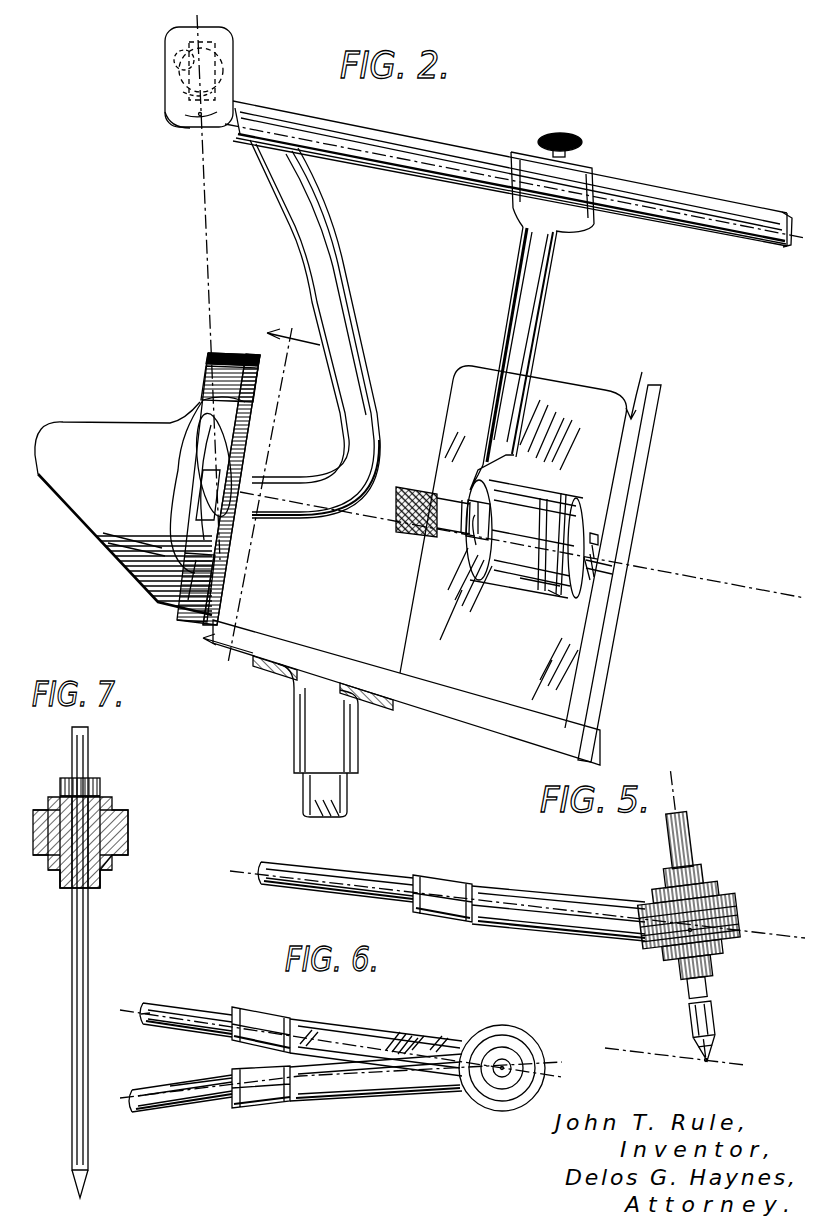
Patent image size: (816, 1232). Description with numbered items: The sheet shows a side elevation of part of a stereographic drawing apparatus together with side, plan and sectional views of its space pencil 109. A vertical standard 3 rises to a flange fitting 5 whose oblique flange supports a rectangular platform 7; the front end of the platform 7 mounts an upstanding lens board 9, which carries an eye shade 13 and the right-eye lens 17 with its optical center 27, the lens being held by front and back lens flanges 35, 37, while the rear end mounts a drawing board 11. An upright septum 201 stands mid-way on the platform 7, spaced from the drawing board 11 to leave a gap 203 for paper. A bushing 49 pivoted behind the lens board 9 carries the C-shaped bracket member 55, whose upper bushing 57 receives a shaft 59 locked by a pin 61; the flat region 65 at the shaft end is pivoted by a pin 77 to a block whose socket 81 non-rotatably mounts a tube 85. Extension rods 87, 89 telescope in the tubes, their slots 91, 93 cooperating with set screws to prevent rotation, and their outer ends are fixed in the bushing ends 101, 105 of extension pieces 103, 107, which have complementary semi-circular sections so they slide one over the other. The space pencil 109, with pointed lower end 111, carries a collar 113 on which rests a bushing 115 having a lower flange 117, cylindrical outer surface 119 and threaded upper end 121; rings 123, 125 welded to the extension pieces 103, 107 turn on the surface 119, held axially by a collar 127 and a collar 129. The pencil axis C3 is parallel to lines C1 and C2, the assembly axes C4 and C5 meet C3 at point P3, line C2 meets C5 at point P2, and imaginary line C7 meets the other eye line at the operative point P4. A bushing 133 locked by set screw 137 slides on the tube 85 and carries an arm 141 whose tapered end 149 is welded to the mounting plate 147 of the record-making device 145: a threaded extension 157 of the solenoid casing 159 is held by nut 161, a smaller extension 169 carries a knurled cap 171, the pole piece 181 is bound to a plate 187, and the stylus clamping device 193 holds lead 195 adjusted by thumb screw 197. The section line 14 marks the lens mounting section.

In FIG. 2, the vertical standard 3 is at (312, 800).
In FIG. 2, the flange fitting 5 is at (318, 748).
In FIG. 2, the rectangular platform 7 is at (426, 700).
In FIG. 2, the lens board 9 is at (196, 582).
In FIG. 2, the drawing board 11 is at (605, 650).
In FIG. 2, the eye shade 13 is at (82, 432).
In FIG. 2, the section line 14 is at (261, 489).
In FIG. 2, the right-eye lens 17 is at (240, 430).
In FIG. 2, the optical center 27 is at (206, 492).
In FIG. 2, the front lens flange 35 is at (222, 488).
In FIG. 2, the back lens flange 37 is at (222, 540).
In FIG. 2, the bushing 49 is at (214, 500).
In FIG. 2, the bracket member 55 is at (248, 106).
In FIG. 2, the bushing 57 is at (230, 42).
In FIG. 2, the bracket or shaft 59 is at (183, 68).
In FIG. 2, the pin 61 is at (216, 56).
In FIG. 2, the flat region 65 is at (172, 44).
In FIG. 2, the pin 77 is at (175, 112).
In FIG. 2, the socket 81 is at (238, 138).
In FIG. 2, the tube 85 is at (420, 175).
In FIG. 6, the extension rod 87 is at (183, 1012).
In FIG. 5, the extension rod 89 is at (352, 878).
In FIG. 6, the extension rod 89 is at (172, 1088).
In FIG. 6, the slot or keyway 91 is at (148, 1020).
In FIG. 6, the slot or keyway 93 is at (162, 1096).
In FIG. 6, the cylindrical bushing end 101 is at (265, 1022).
In FIG. 5, the extension piece 103 is at (524, 928).
In FIG. 6, the extension piece 103 is at (350, 1027).
In FIG. 5, the cylindrical bushing end 105 is at (450, 886).
In FIG. 6, the cylindrical bushing end 105 is at (258, 1100).
In FIG. 5, the extension piece 107 is at (523, 898).
In FIG. 6, the extension piece 107 is at (350, 1092).
In FIG. 7, the space pencil 109 is at (78, 742).
In FIG. 5, the space pencil 109 is at (702, 840).
In FIG. 6, the space pencil 109 is at (508, 1060).
In FIG. 7, the pointed lower end 111 is at (86, 1180).
In FIG. 5, the pointed lower end 111 is at (700, 1052).
In FIG. 7, the collar 113 is at (102, 882).
In FIG. 7, the bushing 115 is at (110, 860).
In FIG. 5, the bushing 115 is at (720, 942).
In FIG. 7, the lower peripheral flange 117 is at (48, 860).
In FIG. 5, the lower peripheral flange 117 is at (670, 950).
In FIG. 7, the cylindrical outer surface 119 is at (124, 812).
In FIG. 7, the threaded upper end 121 is at (104, 796).
In FIG. 7, the circular ring 123 is at (112, 836).
In FIG. 5, the circular ring 123 is at (742, 925).
In FIG. 7, the circular ring 125 is at (128, 822).
In FIG. 5, the circular ring 125 is at (742, 906).
In FIG. 6, the circular ring 125 is at (538, 1082).
In FIG. 7, the collar 127 is at (112, 800).
In FIG. 5, the collar 127 is at (726, 890).
In FIG. 6, the collar 127 is at (514, 1044).
In FIG. 7, the collar 129 is at (96, 780).
In FIG. 5, the collar 129 is at (712, 872).
In FIG. 6, the collar 129 is at (510, 1088).
In FIG. 2, the bushing 133 is at (588, 168).
In FIG. 2, the set screw 137 is at (562, 133).
In FIG. 2, the arm or bracket 141 is at (533, 326).
In FIG. 2, the record-making device 145 is at (580, 482).
In FIG. 2, the mounting plate 147 is at (470, 548).
In FIG. 2, the tapered lower end 149 is at (472, 470).
In FIG. 2, the threaded extension 157 is at (478, 546).
In FIG. 2, the solenoid casing 159 is at (530, 580).
In FIG. 2, the nut 161 is at (560, 521).
In FIG. 2, the cylindrical extension 169 is at (458, 498).
In FIG. 2, the knurled cap 171 is at (400, 535).
In FIG. 2, the armature or pole piece 181 is at (552, 596).
In FIG. 2, the plate 187 is at (565, 590).
In FIG. 2, the clamping device 193 is at (596, 580).
In FIG. 2, the sharpened piece of lead 195 is at (614, 566).
In FIG. 2, the thumb screw 197 is at (600, 545).
In FIG. 2, the septum 201 is at (583, 392).
In FIG. 2, the gap 203 is at (643, 380).
In FIG. 5, the line C1 is at (645, 1042).
In FIG. 2, the line C2 is at (206, 232).
In FIG. 5, the axis of the space pencil C3 is at (688, 796).
In FIG. 6, the axis C4 is at (341, 1036).
In FIG. 2, the axis C5 is at (400, 150).
In FIG. 5, the axis C5 is at (785, 942).
In FIG. 6, the axis C5 is at (341, 1092).
In FIG. 2, the imaginary line C7 is at (280, 495).
In FIG. 2, the point P2 is at (202, 115).
In FIG. 5, the point P3 is at (690, 930).
In FIG. 6, the point P3 is at (500, 1070).
In FIG. 5, the point P4 is at (708, 1062).